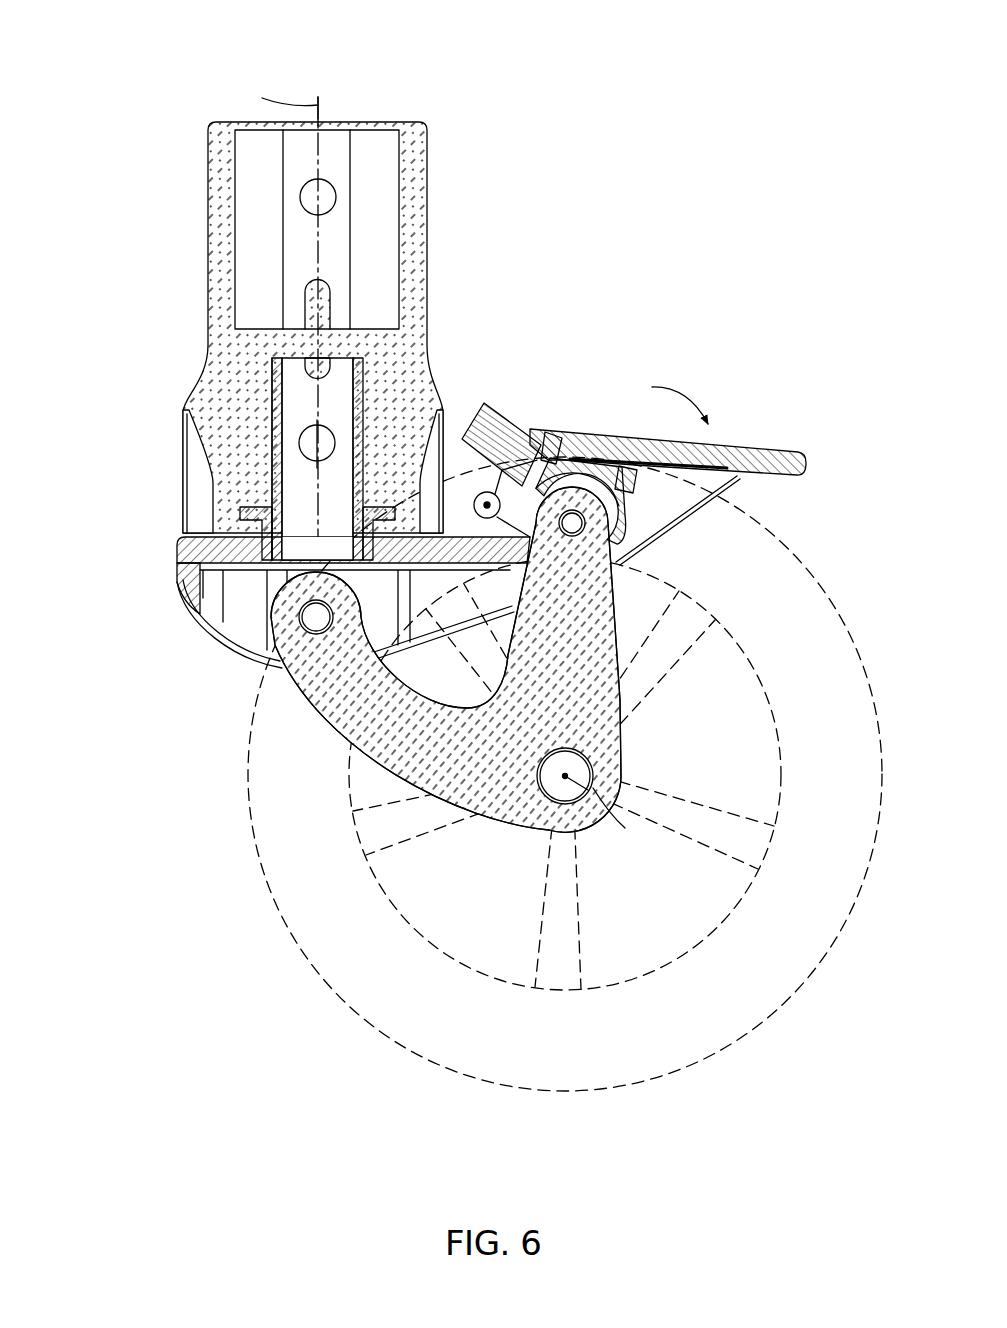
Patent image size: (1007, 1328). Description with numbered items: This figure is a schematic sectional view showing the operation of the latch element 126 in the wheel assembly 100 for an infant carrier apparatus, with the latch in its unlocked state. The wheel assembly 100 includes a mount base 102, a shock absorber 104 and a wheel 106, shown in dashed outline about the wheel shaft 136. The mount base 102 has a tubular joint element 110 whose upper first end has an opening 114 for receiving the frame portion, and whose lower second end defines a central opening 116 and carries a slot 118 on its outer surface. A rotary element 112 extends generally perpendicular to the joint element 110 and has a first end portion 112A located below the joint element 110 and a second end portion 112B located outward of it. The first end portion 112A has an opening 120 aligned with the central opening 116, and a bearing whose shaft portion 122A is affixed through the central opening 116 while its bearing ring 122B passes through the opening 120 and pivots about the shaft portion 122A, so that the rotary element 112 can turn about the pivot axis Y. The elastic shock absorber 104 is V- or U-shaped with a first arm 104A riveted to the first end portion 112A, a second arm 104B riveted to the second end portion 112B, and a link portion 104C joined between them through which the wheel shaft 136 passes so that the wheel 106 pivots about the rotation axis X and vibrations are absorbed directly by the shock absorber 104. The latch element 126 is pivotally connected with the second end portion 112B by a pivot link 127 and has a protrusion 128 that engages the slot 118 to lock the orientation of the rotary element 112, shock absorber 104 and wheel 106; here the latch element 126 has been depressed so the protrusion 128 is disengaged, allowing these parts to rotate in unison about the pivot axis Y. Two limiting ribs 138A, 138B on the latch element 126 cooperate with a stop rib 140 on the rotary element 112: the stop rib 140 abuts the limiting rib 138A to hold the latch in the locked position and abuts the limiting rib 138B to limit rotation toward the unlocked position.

The wheel assembly 100 is at (146, 60).
The mount base 102 is at (86, 127).
The shock absorber 104 is at (490, 699).
The first arm 104A is at (346, 722).
The second arm 104B is at (610, 680).
The link portion 104C is at (602, 820).
The wheel 106 is at (338, 993).
The joint element 110 is at (288, 308).
The rotary element 112 is at (423, 574).
The first end portion 112A is at (228, 645).
The second end portion 112B is at (628, 544).
The opening 114 is at (372, 128).
The central opening 116 is at (268, 438).
The slot 118 is at (489, 444).
The opening 120 is at (177, 545).
The shaft portion 122A is at (272, 378).
The bearing ring 122B is at (256, 527).
The latch element 126 is at (770, 453).
The pivot link 127 is at (621, 465).
The protrusion 128 is at (483, 418).
The wheel shaft 136 is at (594, 758).
The limiting rib 138A is at (626, 523).
The limiting rib 138B is at (572, 509).
The stop rib 140 is at (574, 424).